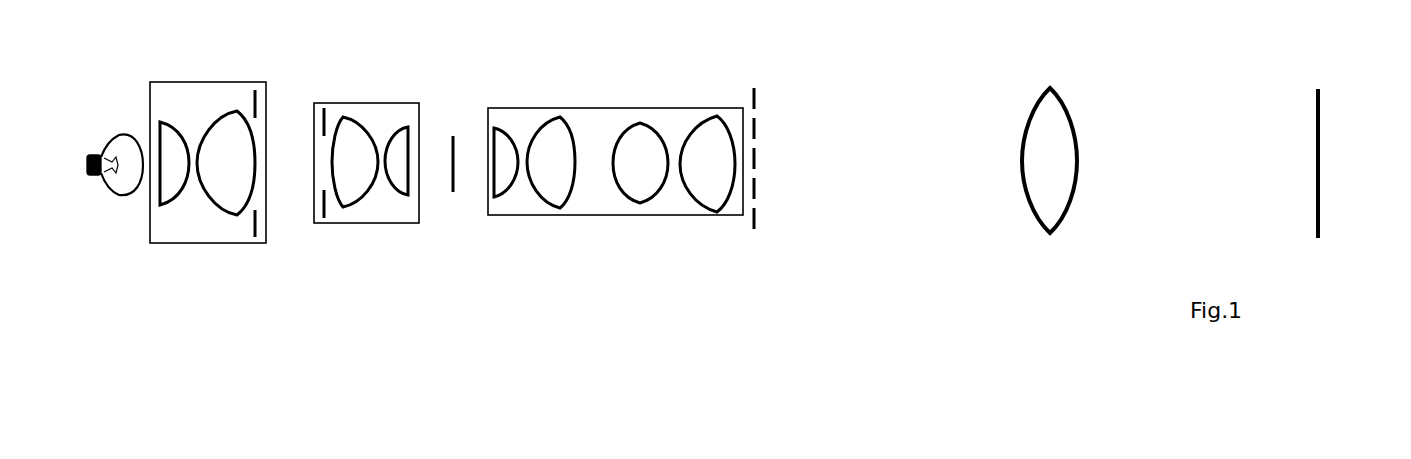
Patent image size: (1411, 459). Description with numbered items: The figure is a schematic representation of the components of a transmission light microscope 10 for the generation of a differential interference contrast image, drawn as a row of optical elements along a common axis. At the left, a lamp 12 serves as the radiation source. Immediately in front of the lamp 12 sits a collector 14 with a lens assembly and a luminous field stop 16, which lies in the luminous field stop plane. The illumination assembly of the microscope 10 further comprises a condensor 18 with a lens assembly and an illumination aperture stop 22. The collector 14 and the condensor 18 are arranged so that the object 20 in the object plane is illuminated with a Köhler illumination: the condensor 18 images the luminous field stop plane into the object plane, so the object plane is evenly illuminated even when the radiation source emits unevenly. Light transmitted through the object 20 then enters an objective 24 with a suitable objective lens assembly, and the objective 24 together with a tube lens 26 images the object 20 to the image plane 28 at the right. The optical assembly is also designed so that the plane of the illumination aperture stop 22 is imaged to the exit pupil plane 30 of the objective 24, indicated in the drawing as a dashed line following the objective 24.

The transmission microscope 10 is at (907, 72).
The lamp 12 is at (130, 183).
The collector 14 is at (163, 93).
The luminous field stop 16 is at (255, 215).
The condensor 18 is at (360, 103).
The object 20 is at (457, 182).
The illumination aperture stop 22 is at (323, 120).
The objective 24 is at (632, 107).
The tube lens 26 is at (1037, 193).
The image plane 28 is at (1320, 157).
The exit pupil plane 30 is at (757, 156).